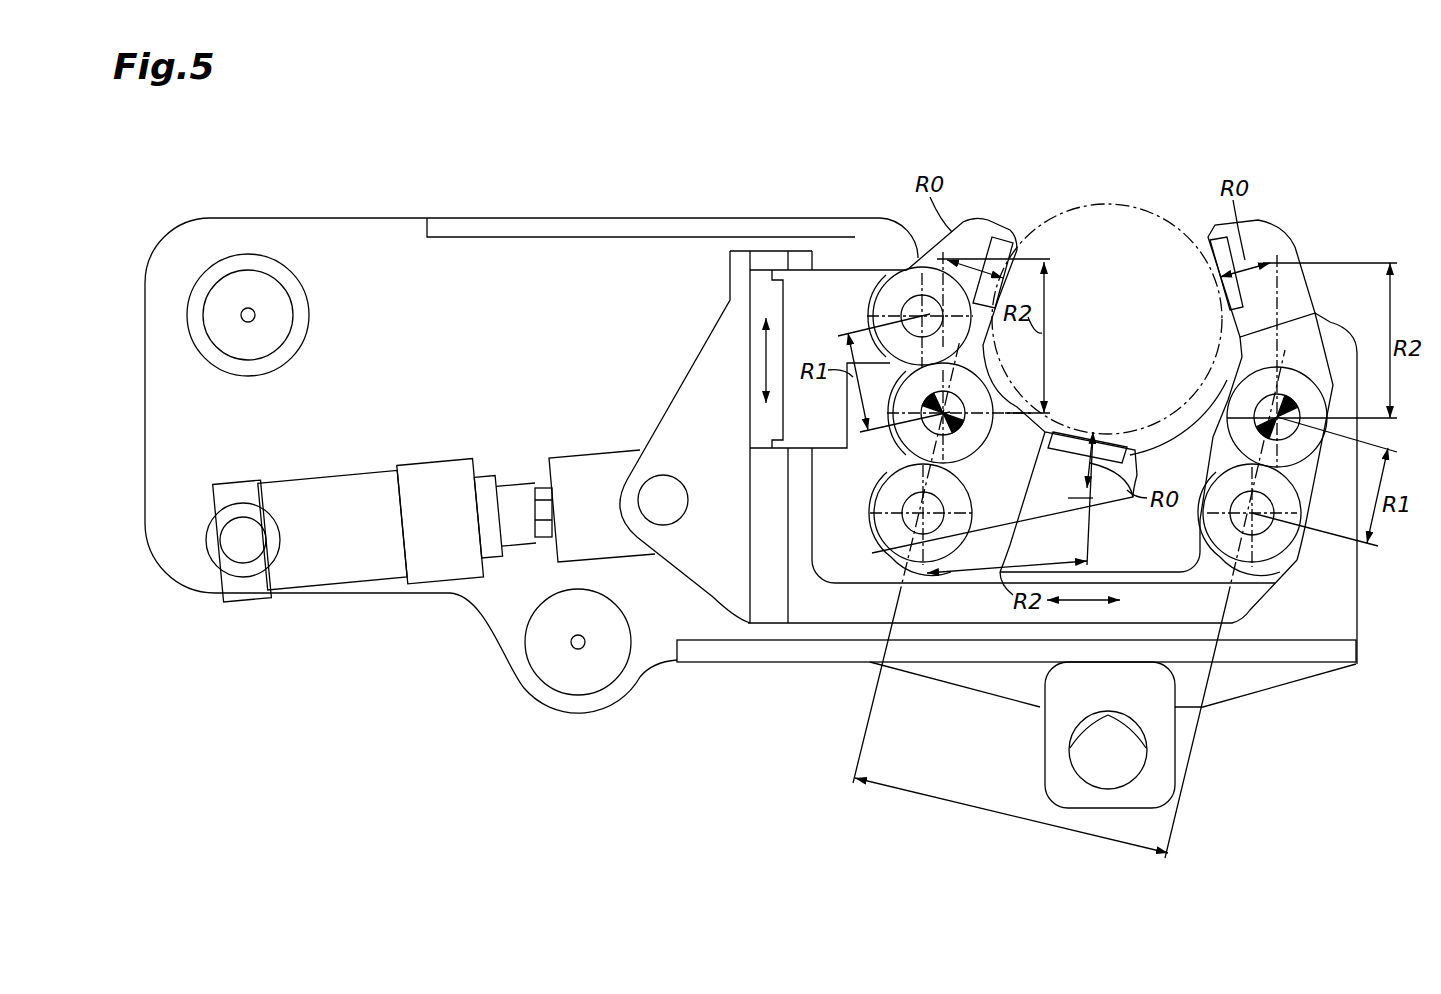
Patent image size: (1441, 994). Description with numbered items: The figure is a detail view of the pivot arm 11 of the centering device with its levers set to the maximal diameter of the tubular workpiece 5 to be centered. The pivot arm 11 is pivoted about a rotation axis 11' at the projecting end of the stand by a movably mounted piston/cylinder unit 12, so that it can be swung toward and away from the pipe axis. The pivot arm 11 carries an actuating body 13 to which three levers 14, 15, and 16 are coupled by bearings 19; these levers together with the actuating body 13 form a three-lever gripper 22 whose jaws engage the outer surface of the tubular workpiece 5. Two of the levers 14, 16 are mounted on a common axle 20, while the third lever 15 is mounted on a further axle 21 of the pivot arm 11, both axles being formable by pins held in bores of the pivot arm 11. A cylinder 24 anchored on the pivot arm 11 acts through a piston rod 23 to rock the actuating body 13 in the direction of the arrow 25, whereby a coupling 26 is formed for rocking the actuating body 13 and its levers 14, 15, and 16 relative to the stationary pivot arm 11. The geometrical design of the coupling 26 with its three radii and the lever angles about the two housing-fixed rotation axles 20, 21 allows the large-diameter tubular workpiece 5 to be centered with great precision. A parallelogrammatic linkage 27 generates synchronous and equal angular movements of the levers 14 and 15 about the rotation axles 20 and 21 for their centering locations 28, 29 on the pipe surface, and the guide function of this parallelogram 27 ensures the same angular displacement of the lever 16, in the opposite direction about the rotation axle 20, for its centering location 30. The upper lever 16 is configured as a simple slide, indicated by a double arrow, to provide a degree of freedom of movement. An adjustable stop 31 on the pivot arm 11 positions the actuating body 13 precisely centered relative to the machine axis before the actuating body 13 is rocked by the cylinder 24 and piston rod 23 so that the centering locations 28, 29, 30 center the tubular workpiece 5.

The tubular workpiece 5 is at (1088, 207).
The pivot arm 11 is at (787, 394).
The rotation axis 11' is at (248, 268).
The piston/cylinder unit 12 is at (572, 660).
The actuating body 13 is at (850, 596).
The lever 14 is at (1097, 487).
The lever 15 is at (1258, 243).
The lever 16 is at (762, 305).
The bearings 19 is at (897, 292).
The common axle 20 is at (913, 437).
The further axle 21 is at (1233, 392).
The three-lever gripper 22 is at (1308, 230).
The piston rod 23 is at (523, 527).
The cylinder 24 is at (360, 545).
The arrow 25 is at (1085, 603).
The coupling 26 is at (1154, 614).
The parallelogrammatic linkage 27 is at (1000, 808).
The centering location 28 is at (1212, 278).
The centering location 29 is at (1102, 430).
The centering location 30 is at (1007, 270).
The adjustable stop 31 is at (1080, 698).